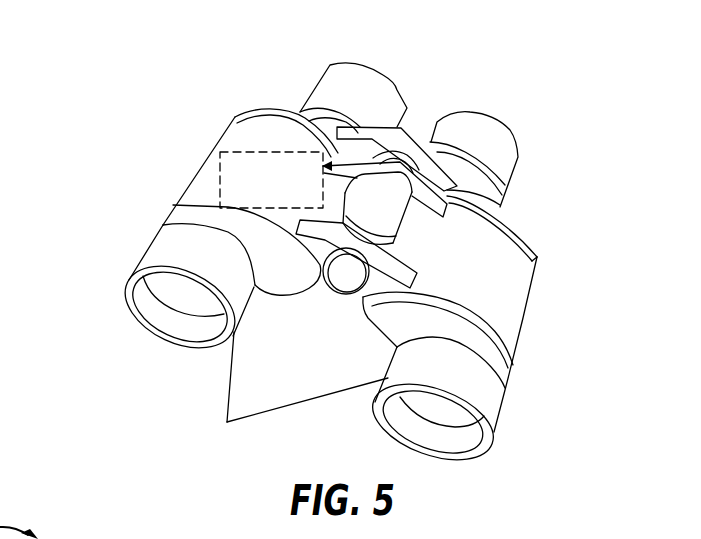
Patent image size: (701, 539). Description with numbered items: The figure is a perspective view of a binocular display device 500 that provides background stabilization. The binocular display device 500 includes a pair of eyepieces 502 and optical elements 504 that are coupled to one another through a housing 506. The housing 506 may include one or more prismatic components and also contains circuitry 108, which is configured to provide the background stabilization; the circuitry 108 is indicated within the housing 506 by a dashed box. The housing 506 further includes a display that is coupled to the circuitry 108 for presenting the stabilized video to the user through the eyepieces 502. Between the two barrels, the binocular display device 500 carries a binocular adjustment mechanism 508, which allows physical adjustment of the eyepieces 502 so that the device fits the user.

The binocular display device 500 is at (133, 33).
The eyepieces 502 is at (400, 82).
The optical elements 504 is at (232, 420).
The housing 506 is at (243, 135).
The binocular adjustment mechanism 508 is at (348, 287).
The circuitry 108 is at (220, 187).